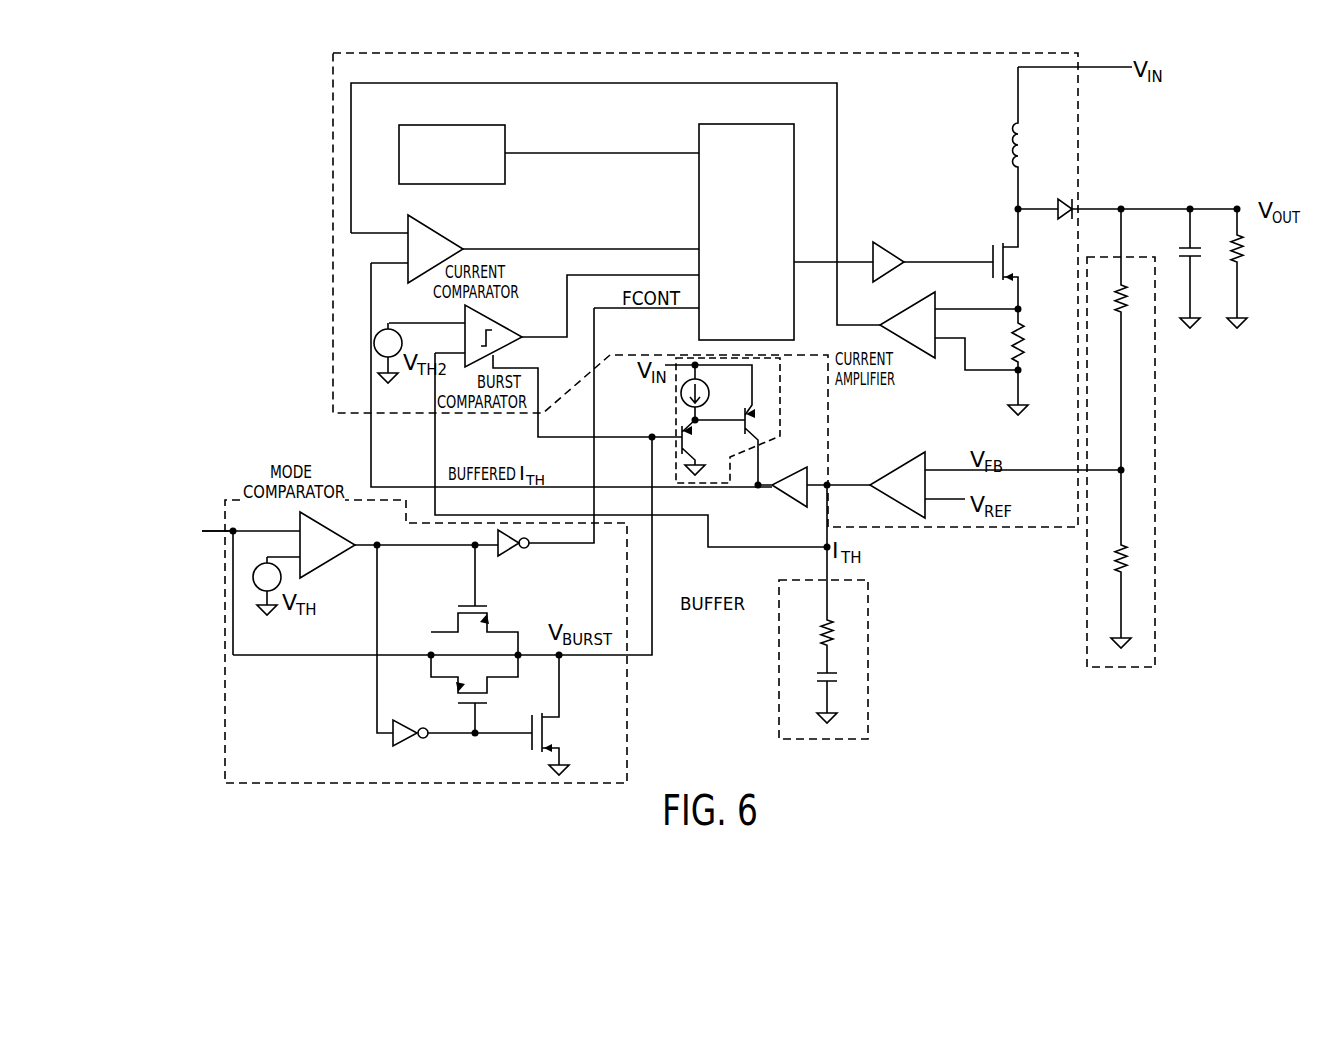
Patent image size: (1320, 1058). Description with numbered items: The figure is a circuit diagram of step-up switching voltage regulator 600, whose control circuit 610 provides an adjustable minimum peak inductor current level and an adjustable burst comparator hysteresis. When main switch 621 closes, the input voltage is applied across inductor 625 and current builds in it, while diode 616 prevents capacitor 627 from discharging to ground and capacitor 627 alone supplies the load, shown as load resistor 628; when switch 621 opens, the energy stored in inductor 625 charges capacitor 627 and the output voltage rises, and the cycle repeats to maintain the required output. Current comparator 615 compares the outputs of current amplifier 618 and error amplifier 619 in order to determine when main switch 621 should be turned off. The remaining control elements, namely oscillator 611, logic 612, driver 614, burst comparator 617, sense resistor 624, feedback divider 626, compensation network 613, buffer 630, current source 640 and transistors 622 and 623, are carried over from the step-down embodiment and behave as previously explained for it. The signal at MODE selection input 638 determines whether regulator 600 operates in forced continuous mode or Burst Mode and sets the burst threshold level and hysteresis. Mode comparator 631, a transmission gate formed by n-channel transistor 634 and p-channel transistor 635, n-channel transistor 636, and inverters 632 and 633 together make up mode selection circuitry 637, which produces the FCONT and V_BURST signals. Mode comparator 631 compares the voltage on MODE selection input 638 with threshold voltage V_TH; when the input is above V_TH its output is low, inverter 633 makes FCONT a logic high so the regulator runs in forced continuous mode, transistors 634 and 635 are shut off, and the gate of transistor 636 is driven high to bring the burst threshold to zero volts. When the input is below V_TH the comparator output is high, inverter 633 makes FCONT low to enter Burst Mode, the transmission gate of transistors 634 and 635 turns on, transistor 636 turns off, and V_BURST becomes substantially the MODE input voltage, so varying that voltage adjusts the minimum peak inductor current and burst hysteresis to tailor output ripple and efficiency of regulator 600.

The step-up regulator 600 is at (992, 720).
The control circuit 610 is at (333, 340).
The oscillator 611 is at (483, 125).
The logic 612 is at (761, 261).
The compensation network 613 is at (868, 665).
The driver 614 is at (887, 248).
The current comparator 615 is at (445, 236).
The diode 616 is at (1066, 200).
The burst comparator 617 is at (515, 325).
The current amplifier 618 is at (900, 312).
The error amplifier 619 is at (885, 472).
The main switch 621 is at (1015, 262).
The transistor 622 is at (702, 441).
The transistor 623 is at (766, 422).
The sense resistor 624 is at (1036, 350).
The inductor 625 is at (1003, 141).
The feedback divider 626 is at (1157, 505).
The capacitor 627 is at (1199, 270).
The load resistor 628 is at (1246, 270).
The buffer 630 is at (777, 492).
The mode comparator 631 is at (333, 560).
The inverter 632 is at (392, 740).
The inverter 633 is at (515, 556).
The n-channel transistor 634 is at (503, 619).
The p-channel transistor 635 is at (508, 689).
The n-channel transistor 636 is at (538, 766).
The mode selection circuitry 637 is at (222, 745).
The MODE selection input 638 is at (193, 561).
The current source 640 is at (676, 398).